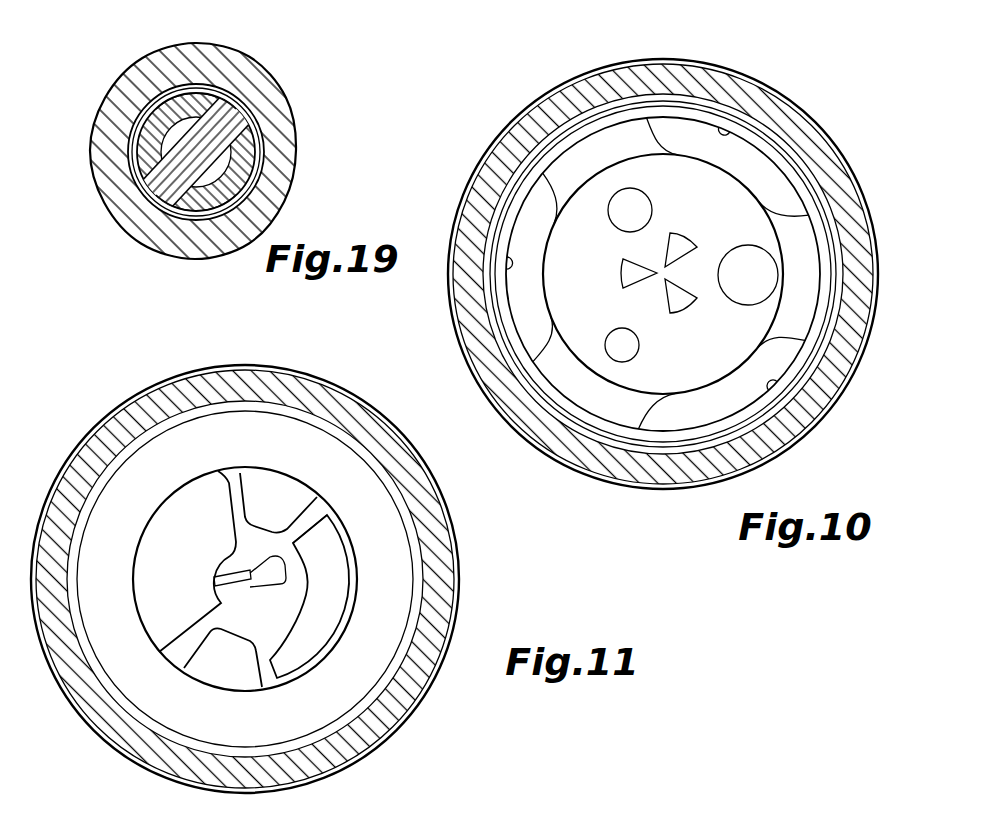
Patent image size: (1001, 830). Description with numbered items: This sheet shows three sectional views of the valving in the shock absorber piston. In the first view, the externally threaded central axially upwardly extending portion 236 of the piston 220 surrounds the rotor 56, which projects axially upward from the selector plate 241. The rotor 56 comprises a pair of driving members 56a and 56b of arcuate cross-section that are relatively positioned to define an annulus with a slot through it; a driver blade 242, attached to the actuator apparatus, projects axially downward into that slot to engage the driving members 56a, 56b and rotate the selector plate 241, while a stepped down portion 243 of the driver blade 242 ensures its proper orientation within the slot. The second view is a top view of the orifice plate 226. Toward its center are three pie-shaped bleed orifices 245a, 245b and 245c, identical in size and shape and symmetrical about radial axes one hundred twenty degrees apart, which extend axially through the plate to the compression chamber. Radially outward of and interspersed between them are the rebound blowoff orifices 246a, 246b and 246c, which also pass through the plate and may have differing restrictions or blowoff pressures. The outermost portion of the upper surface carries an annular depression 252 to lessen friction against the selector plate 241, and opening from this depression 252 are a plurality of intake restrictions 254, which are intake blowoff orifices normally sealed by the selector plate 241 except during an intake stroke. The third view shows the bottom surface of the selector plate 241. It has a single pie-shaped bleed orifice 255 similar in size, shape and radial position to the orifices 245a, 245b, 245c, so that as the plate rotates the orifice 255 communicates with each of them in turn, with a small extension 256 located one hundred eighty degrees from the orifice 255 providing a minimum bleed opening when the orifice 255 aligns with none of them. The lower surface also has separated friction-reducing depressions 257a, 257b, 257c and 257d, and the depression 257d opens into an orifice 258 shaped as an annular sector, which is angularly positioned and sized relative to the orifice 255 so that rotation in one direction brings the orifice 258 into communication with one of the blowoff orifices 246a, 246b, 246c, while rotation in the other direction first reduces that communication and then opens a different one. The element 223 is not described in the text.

In FIG. 19, the central axially upwardly extending portion 236 is at (158, 65).
In FIG. 19, the rotor 56 is at (162, 113).
In FIG. 19, the driving member 56a is at (203, 100).
In FIG. 19, the driving member 56b is at (253, 163).
In FIG. 19, the driver blade 242 is at (233, 127).
In FIG. 19, the stepped down portion 243 is at (157, 153).
In FIG. 10, the piston 220 is at (566, 87).
In FIG. 11, the piston 220 is at (255, 385).
In FIG. 10, the housing wall 223 is at (684, 62).
In FIG. 10, the orifice plate 226 is at (808, 182).
In FIG. 10, the annular depression 252 is at (612, 143).
In FIG. 10, the intake restrictions 254 is at (724, 130).
In FIG. 10, the pie-shaped orifice 245a is at (625, 270).
In FIG. 10, the pie-shaped orifice 245b is at (684, 243).
In FIG. 10, the pie-shaped orifice 245c is at (684, 302).
In FIG. 10, the blowoff orifice 246a is at (614, 334).
In FIG. 10, the blowoff orifice 246b is at (628, 190).
In FIG. 10, the blowoff orifice 246c is at (777, 275).
In FIG. 11, the selector plate 241 is at (390, 681).
In FIG. 11, the pie-shaped bleed orifice 255 is at (268, 560).
In FIG. 11, the small extension 256 is at (217, 570).
In FIG. 11, the depression 257a is at (285, 487).
In FIG. 11, the depression 257b is at (165, 505).
In FIG. 11, the depression 257c is at (210, 684).
In FIG. 11, the depression 257d is at (303, 542).
In FIG. 11, the orifice 258 is at (347, 597).